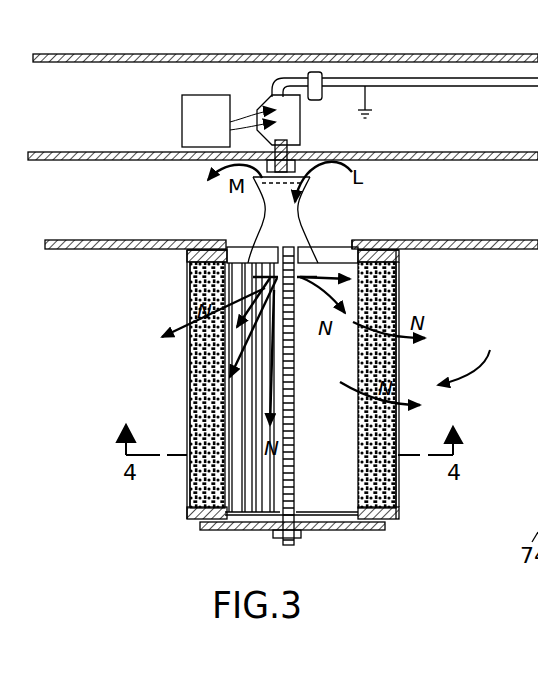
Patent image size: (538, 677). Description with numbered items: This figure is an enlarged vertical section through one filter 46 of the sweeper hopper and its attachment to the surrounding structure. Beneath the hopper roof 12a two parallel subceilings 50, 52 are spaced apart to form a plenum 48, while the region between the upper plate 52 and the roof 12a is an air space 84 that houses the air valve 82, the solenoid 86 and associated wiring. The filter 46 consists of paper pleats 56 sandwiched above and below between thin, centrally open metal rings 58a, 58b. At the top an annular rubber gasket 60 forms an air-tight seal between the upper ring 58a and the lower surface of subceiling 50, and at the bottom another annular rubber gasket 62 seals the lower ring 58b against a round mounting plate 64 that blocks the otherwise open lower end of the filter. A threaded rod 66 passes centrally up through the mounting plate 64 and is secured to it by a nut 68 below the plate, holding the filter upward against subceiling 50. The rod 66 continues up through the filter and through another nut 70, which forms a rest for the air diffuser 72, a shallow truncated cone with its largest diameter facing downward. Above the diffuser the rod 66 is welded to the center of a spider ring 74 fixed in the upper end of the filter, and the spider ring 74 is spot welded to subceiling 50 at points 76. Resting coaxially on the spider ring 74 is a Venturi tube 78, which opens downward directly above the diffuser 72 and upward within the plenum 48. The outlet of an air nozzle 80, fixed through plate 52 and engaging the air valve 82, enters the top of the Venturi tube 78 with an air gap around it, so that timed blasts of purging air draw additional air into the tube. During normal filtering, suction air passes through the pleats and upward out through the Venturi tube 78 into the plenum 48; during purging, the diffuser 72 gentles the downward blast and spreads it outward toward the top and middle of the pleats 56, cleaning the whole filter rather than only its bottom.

The roof 12a is at (440, 55).
The air space 84 is at (150, 88).
The subceiling 52 is at (450, 152).
The subceiling 50 is at (440, 240).
The solenoid 86 is at (317, 80).
The air nozzle 80 is at (258, 159).
The air valve 82 is at (275, 108).
The Venturi tube 78 is at (290, 220).
The spider ring 74 is at (237, 247).
The air diffuser 72 is at (300, 270).
The spot weld points 76 is at (352, 243).
The nut 70 is at (292, 285).
The threaded rod 66 is at (288, 455).
The nut 68 is at (302, 535).
The mounting plate 64 is at (245, 530).
The annular rubber gasket 62 is at (215, 520).
The paper pleats 56 is at (225, 403).
The metal ring 58a is at (398, 262).
The metal ring 58b is at (395, 518).
The annular rubber gasket 60 is at (187, 255).
The plenum 48 is at (150, 205).
The filter 46 is at (471, 356).